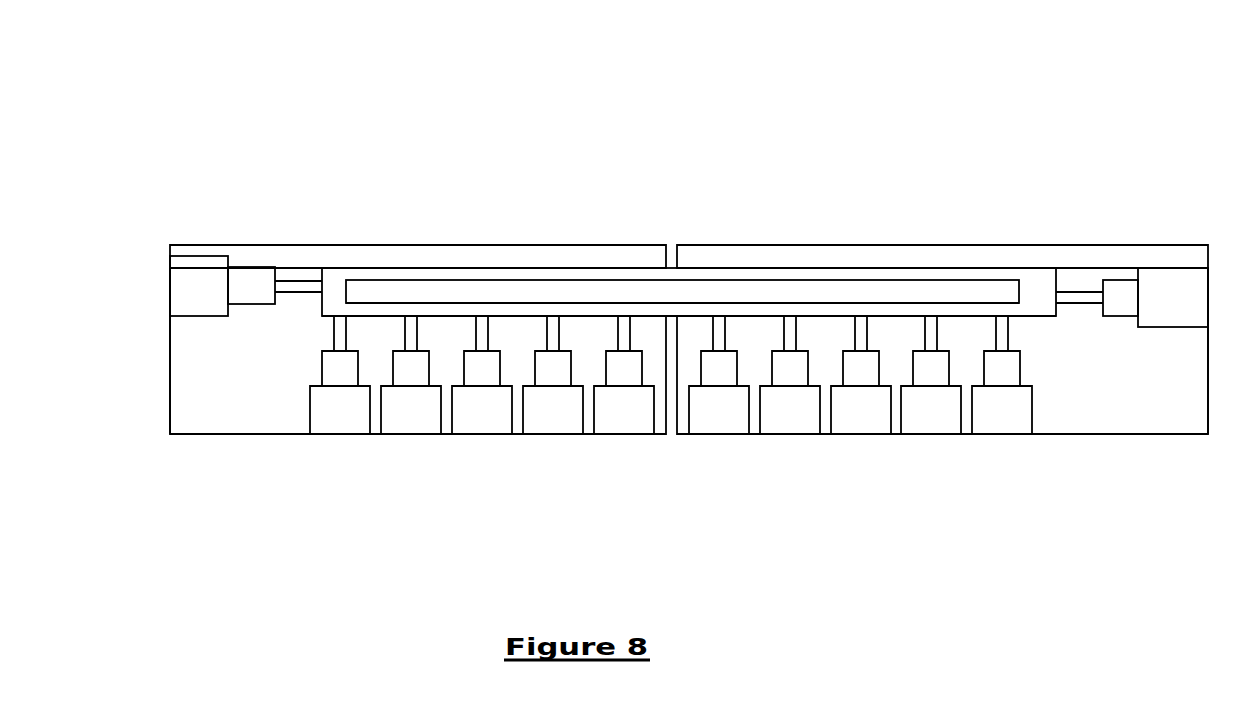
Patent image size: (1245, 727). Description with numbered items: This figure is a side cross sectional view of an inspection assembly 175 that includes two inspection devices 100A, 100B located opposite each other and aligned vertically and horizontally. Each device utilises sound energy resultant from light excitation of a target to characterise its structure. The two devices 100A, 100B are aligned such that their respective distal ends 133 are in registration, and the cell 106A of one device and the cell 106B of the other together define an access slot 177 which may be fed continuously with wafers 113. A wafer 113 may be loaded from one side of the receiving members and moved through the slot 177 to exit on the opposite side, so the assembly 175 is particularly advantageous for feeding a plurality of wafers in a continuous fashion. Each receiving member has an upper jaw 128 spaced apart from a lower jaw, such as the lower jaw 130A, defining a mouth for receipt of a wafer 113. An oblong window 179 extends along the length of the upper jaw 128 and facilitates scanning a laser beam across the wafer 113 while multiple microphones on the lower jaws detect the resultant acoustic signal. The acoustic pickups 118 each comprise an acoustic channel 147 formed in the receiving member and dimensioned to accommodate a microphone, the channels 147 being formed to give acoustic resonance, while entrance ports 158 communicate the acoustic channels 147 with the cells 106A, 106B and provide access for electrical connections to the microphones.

The inspection assembly 175 is at (800, 99).
The inspection device 100A is at (347, 256).
The inspection device 100B is at (1018, 258).
The oblong window 179 is at (453, 243).
The upper jaw 128 is at (536, 256).
The semiconductor wafer 113 is at (595, 291).
The distal end 133 is at (665, 252).
The entrance port 158 is at (418, 313).
The access slot 177 is at (630, 304).
The acoustic pickup 118 is at (287, 292).
The cell 106A is at (333, 304).
The cell 106B is at (1043, 304).
The lower jaw 130A is at (288, 410).
The acoustic channel 147 is at (217, 282).